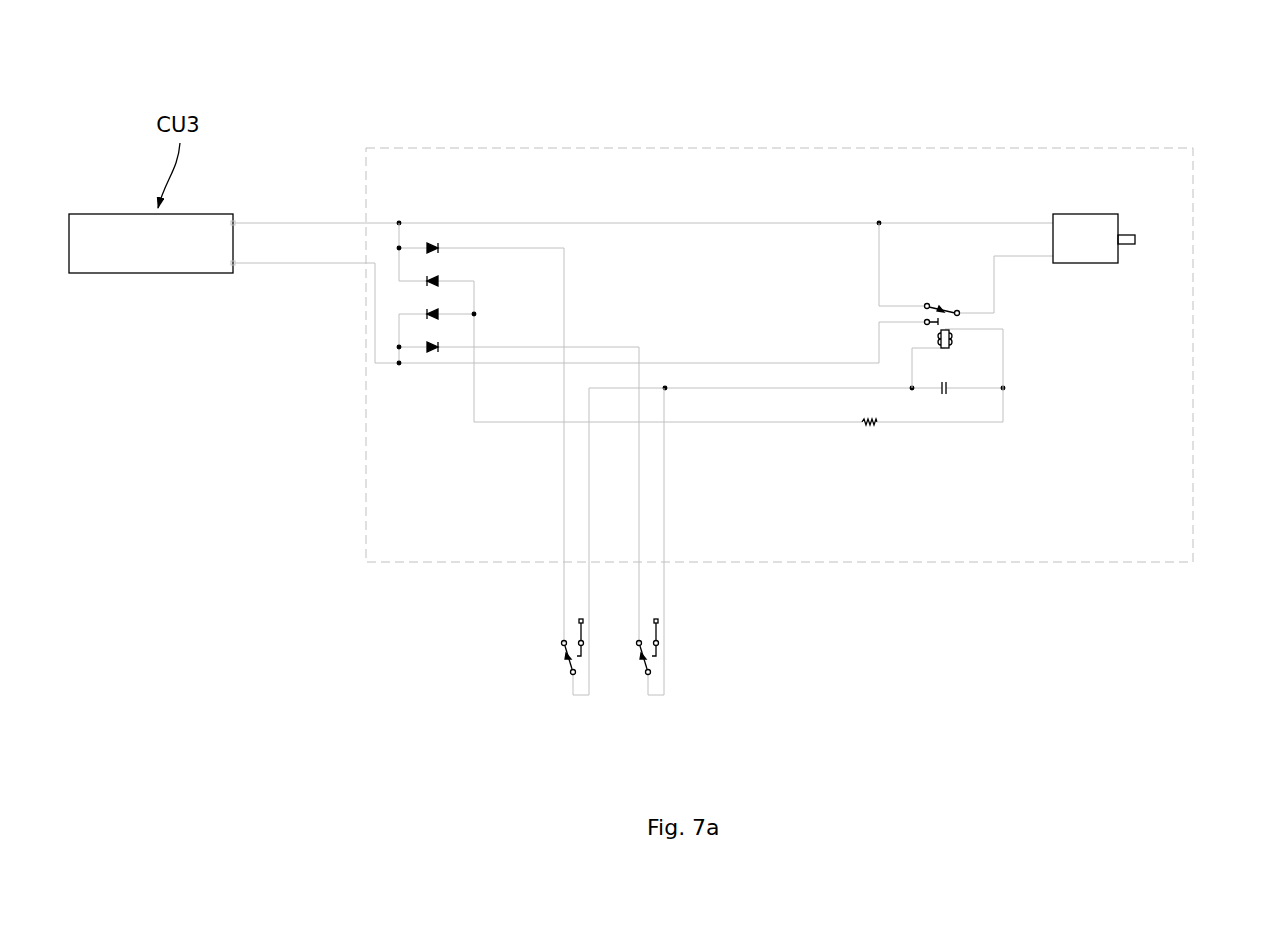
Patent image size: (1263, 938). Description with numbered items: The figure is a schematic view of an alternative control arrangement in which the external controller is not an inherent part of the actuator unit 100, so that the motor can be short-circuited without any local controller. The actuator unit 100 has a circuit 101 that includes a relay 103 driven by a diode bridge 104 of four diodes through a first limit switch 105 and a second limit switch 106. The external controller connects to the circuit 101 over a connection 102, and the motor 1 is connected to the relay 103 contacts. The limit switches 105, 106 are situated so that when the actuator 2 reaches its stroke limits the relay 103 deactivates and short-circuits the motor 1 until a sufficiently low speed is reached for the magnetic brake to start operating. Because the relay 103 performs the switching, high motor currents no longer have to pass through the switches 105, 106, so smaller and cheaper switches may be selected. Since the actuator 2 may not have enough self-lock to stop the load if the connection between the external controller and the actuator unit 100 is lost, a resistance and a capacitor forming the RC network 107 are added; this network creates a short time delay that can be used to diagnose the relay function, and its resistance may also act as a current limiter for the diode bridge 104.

The motor 1 is at (1068, 210).
The actuator 2 is at (1127, 248).
The actuator unit 100 is at (787, 145).
The circuit 101 is at (568, 220).
The connection to control unit CU3 102 is at (270, 212).
The relay 103 is at (1008, 378).
The diode bridge 104 is at (424, 372).
The limit switch 105 is at (553, 680).
The limit switch 106 is at (672, 676).
The RC network 107 is at (899, 428).